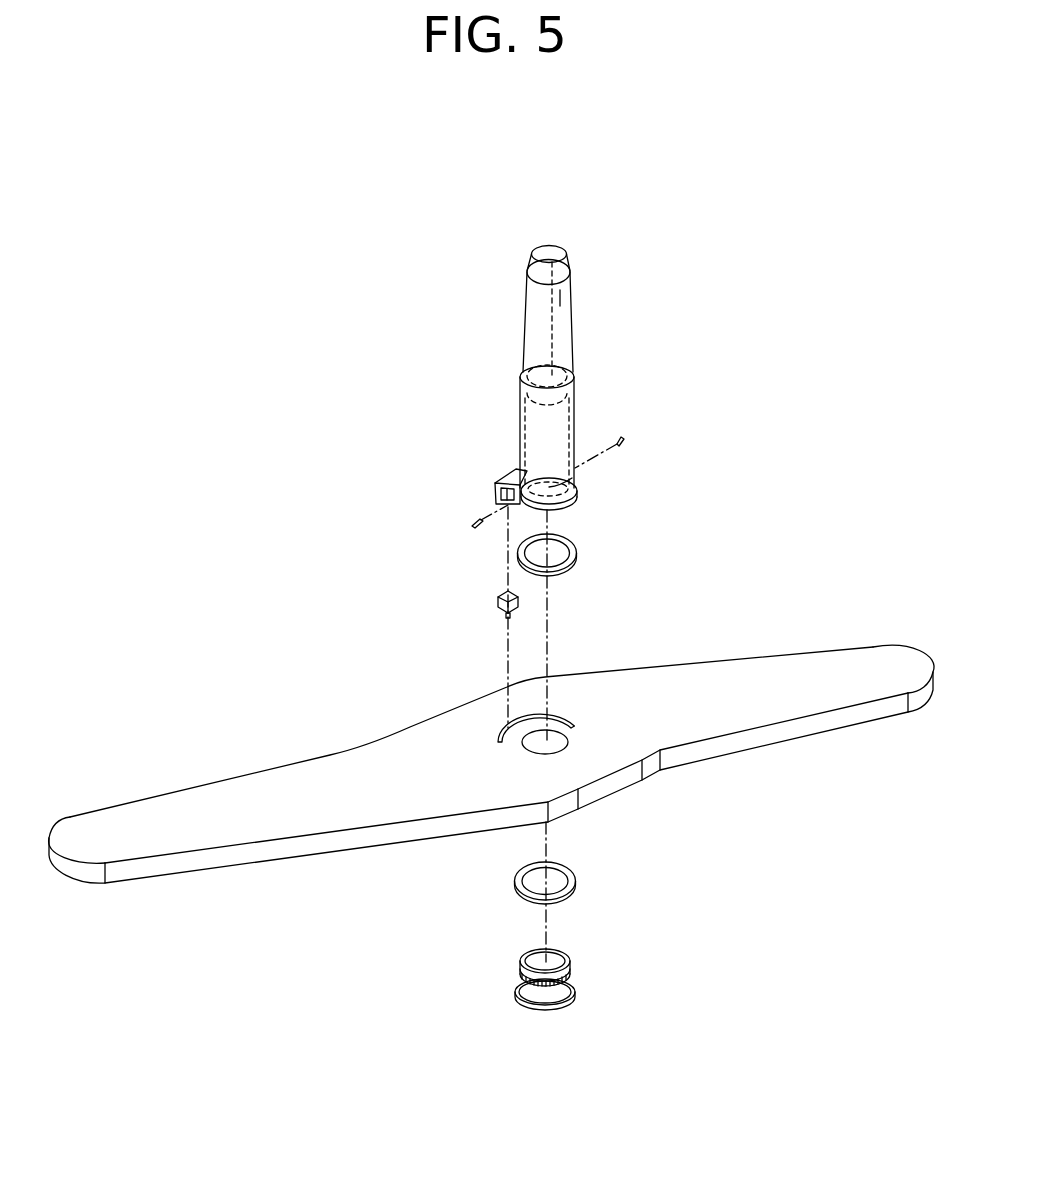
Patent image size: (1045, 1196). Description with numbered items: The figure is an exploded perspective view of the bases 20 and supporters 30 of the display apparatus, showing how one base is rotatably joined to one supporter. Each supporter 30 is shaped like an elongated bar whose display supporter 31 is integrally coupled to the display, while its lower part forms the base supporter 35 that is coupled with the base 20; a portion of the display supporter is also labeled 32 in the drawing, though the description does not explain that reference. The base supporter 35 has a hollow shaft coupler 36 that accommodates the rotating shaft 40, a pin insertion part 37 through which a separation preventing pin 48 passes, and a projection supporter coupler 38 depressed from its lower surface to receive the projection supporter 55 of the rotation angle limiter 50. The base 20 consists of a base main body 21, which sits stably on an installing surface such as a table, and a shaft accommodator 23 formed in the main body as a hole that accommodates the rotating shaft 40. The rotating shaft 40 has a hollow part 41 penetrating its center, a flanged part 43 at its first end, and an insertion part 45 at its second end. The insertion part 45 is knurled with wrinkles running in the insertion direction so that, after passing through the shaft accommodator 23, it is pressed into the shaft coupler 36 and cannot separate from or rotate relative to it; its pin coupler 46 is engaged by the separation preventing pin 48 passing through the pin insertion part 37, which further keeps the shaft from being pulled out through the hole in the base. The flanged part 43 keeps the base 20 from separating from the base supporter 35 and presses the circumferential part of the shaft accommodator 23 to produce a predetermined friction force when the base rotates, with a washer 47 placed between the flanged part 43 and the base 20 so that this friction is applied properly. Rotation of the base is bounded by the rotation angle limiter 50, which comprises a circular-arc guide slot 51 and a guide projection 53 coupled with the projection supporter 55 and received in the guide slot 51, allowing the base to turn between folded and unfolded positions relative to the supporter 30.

The base 20 is at (843, 801).
The base main body 21 is at (822, 730).
The shaft accommodator 23 is at (570, 748).
The supporter 30 is at (440, 305).
The display supporter 31 is at (527, 312).
The key groove 32 is at (562, 298).
The base supporter 35 is at (521, 395).
The shaft coupler 36 is at (577, 500).
The pin insertion part 37 is at (578, 490).
The projection supporter coupler 38 is at (494, 489).
The rotating shaft 40 is at (416, 1037).
The hollow part 41 is at (528, 963).
The flanged part 43 is at (520, 1003).
The insertion part 45 is at (521, 977).
The pin coupler 46 is at (516, 988).
The washer 47 is at (578, 552).
The separation preventing pin 48 is at (620, 436).
The rotation angle limiter 50 is at (416, 598).
The guide slot 51 is at (503, 738).
The guide projection 53 is at (506, 614).
The projection supporter 55 is at (500, 601).